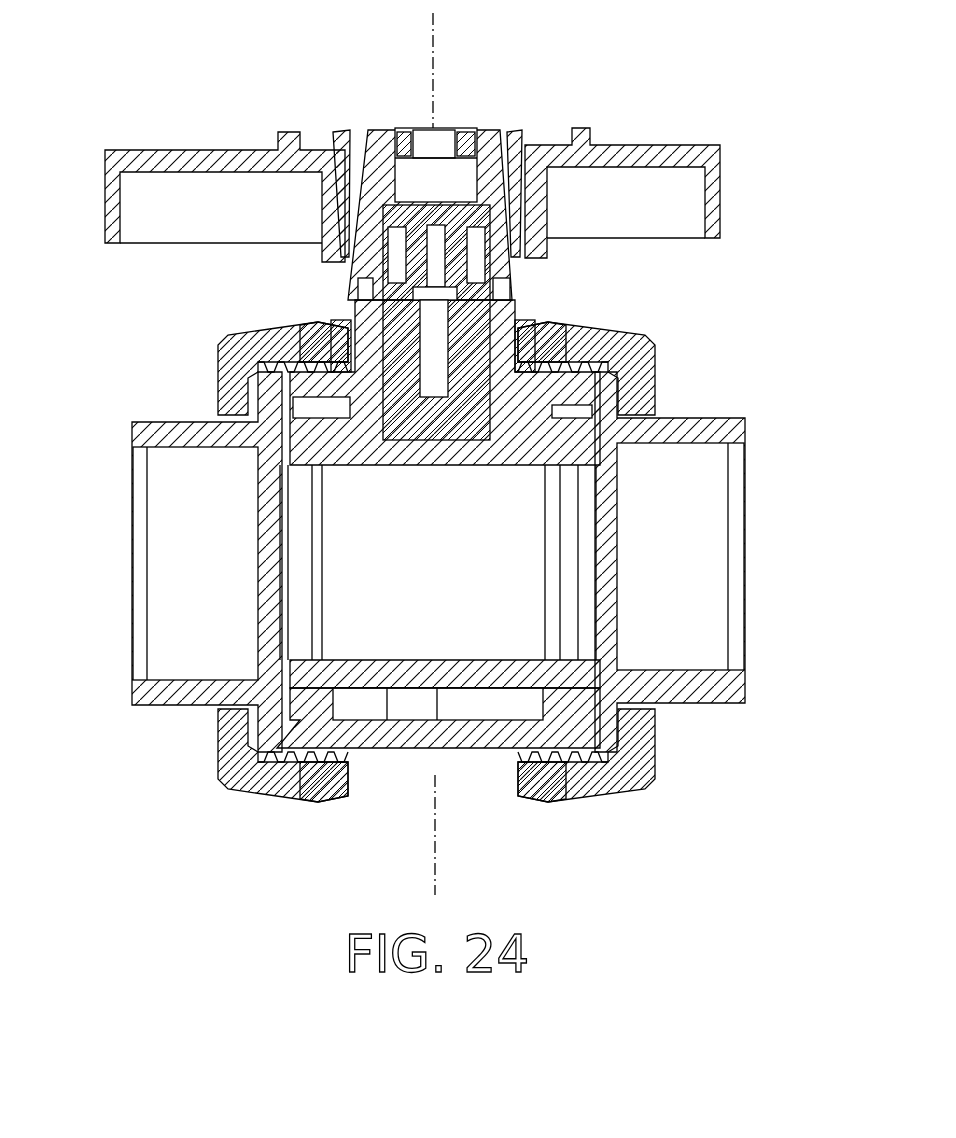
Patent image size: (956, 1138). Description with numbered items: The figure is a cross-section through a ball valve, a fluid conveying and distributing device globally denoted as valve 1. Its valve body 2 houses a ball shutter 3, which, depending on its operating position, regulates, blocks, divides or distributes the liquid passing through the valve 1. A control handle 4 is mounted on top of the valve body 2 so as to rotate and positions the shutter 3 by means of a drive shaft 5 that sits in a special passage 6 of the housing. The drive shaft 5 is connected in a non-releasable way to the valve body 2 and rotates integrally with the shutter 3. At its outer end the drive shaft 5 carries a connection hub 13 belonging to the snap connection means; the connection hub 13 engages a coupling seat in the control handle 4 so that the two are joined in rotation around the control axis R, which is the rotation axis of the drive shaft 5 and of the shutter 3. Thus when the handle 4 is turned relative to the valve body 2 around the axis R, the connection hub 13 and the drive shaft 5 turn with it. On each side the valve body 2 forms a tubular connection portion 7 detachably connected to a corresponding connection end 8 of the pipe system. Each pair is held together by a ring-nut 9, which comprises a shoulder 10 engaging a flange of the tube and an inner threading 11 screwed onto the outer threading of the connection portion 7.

The valve 1 is at (682, 323).
The valve body 2 is at (450, 737).
The shutter 3 is at (387, 668).
The control handle 4 is at (620, 148).
The drive shaft 5 is at (400, 330).
The passage 6 is at (520, 345).
The tubular connection portion 7 is at (292, 797).
The connection end 8 is at (170, 430).
The ring-nut 9 is at (238, 335).
The shoulder 10 is at (222, 390).
The inner threading 11 is at (320, 792).
The connection hub 13 is at (367, 130).
The control axis R is at (433, 55).